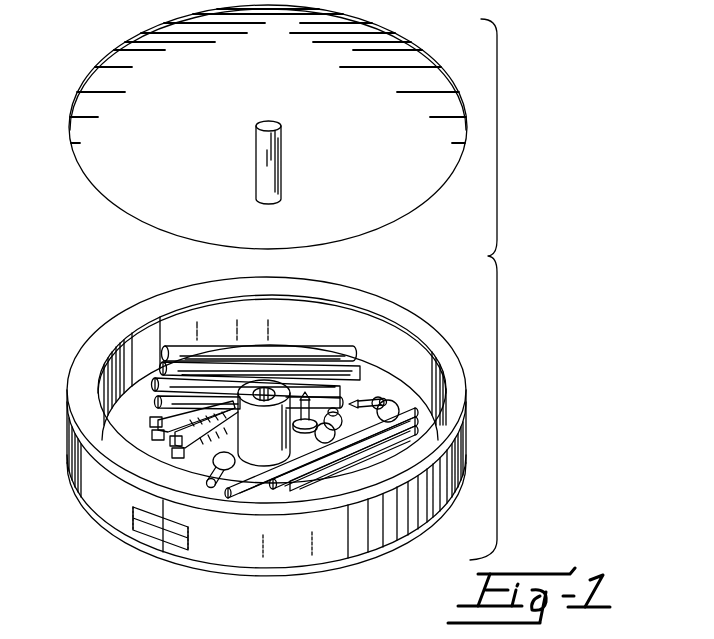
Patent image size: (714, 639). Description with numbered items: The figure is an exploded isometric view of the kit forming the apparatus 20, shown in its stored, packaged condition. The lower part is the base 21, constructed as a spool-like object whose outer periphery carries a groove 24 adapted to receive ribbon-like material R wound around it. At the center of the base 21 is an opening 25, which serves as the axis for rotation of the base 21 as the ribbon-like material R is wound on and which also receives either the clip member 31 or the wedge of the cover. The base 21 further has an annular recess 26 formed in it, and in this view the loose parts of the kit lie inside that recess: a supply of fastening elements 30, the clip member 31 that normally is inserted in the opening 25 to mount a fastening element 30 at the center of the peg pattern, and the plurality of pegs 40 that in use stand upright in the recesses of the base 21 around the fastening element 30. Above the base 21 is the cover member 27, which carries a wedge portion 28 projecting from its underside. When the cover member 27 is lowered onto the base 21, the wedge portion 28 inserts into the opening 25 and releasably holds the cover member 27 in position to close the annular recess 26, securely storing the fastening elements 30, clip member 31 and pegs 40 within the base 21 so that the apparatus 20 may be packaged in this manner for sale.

The apparatus 20 is at (522, 250).
The base 21 is at (68, 394).
The groove 24 is at (94, 458).
The opening 25 is at (268, 396).
The annular recess 26 is at (400, 344).
The cover member 27 is at (99, 176).
The wedge portion 28 is at (270, 171).
The fastening element 30 is at (408, 394).
The clip member 31 is at (150, 418).
The pegs 40 is at (297, 372).
The ribbon-like material R is at (216, 552).